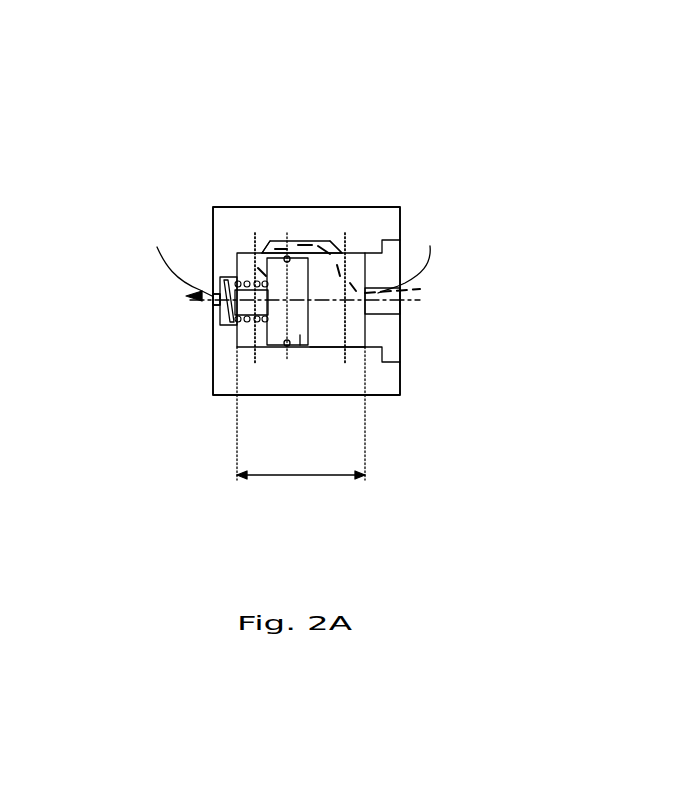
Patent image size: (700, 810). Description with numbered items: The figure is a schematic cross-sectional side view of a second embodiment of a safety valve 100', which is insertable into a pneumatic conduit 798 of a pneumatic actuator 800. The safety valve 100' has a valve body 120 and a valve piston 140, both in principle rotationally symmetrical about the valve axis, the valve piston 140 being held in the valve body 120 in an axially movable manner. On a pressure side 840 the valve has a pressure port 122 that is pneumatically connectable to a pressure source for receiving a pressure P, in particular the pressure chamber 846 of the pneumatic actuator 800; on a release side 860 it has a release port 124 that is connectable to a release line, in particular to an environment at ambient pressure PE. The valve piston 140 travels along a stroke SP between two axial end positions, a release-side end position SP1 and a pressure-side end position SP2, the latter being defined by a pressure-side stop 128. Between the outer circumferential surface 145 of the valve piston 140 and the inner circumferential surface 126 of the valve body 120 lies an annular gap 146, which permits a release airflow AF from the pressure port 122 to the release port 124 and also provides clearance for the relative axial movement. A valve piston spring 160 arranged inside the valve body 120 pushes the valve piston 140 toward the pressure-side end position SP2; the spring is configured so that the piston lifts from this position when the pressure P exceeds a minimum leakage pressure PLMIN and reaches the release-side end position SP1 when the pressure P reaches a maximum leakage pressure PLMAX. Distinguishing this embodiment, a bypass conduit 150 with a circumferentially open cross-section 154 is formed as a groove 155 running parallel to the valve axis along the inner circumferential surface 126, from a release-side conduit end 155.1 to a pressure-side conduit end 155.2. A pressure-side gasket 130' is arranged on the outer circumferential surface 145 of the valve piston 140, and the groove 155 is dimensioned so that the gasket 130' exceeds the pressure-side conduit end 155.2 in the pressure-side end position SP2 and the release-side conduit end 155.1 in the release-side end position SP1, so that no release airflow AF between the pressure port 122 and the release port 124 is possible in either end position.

The safety valve 100' is at (312, 206).
The valve body 120 is at (233, 213).
The pneumatic conduit 798 is at (219, 197).
The pressure-side stop 128 is at (393, 349).
The pressure port 122 is at (522, 328).
The pressure P is at (522, 328).
The minimum leakage pressure PLMIN is at (522, 328).
The maximum leakage pressure PLMAX is at (402, 302).
The pressure side 840 is at (480, 270).
The pressure chamber 846 is at (480, 270).
The pneumatic actuator 800 is at (441, 292).
The pressure-side gasket 130' is at (298, 204).
The bypass conduit 150 is at (330, 181).
The circumferentially open cross-section 154 is at (330, 181).
The groove 155 is at (317, 242).
The release-side conduit end 155.1 is at (264, 238).
The pressure-side conduit end 155.2 is at (337, 238).
The inner circumferential surface 126 is at (331, 341).
The valve piston 140 is at (303, 348).
The outer circumferential surface 145 is at (300, 335).
The annular gap 146 is at (287, 357).
The valve piston spring 160 is at (237, 275).
The release port 124 is at (213, 302).
The release side 860 is at (125, 270).
The ambient pressure PE is at (163, 278).
The release airflow AF is at (291, 261).
The stroke path SP is at (273, 352).
The release-side end position SP1 is at (255, 361).
The pressure-side end position SP2 is at (345, 361).